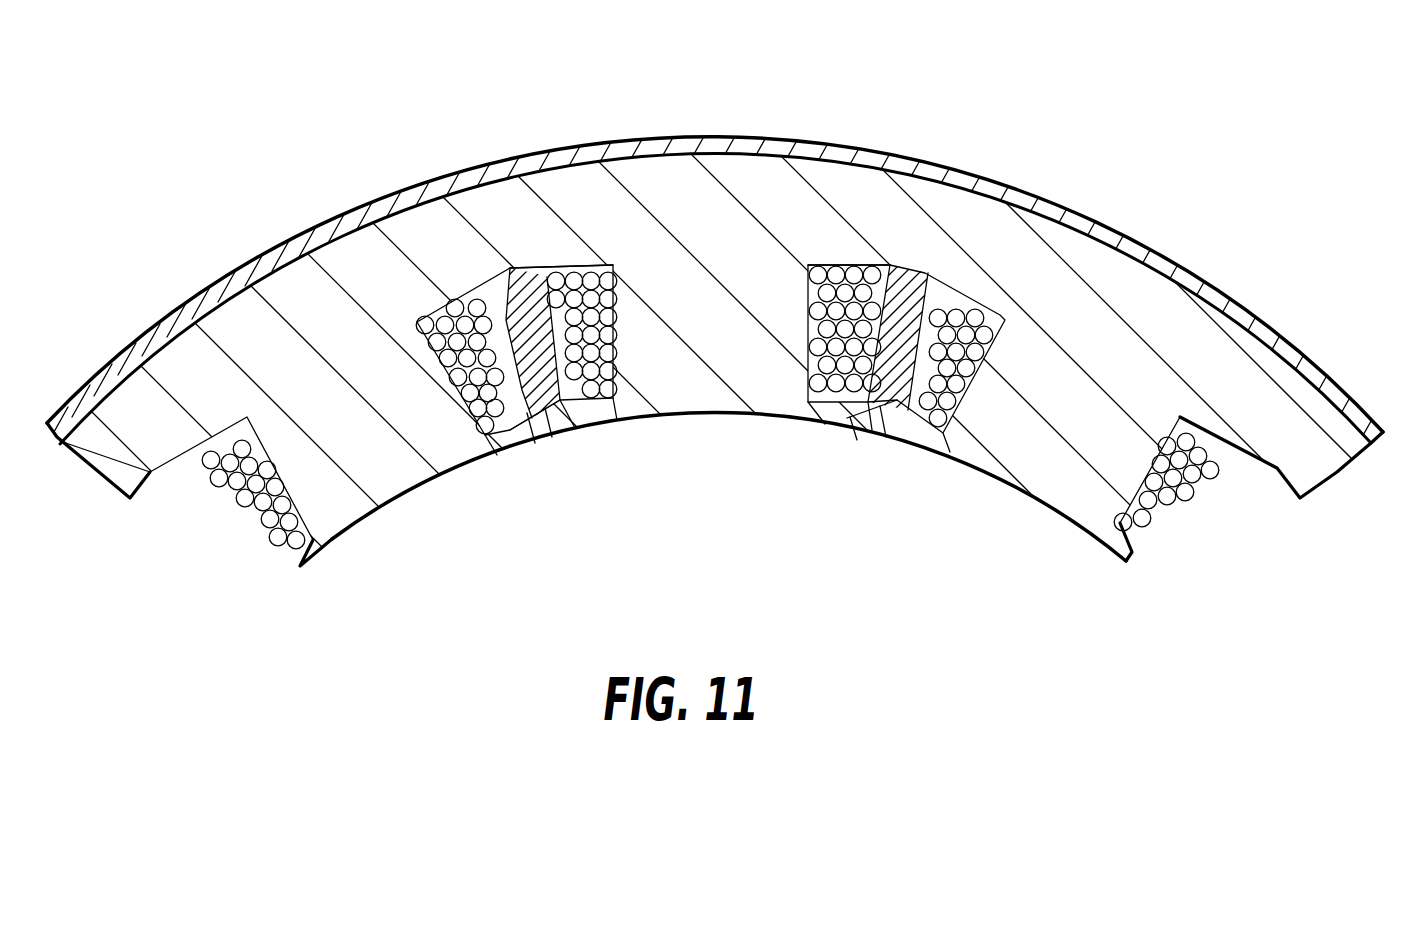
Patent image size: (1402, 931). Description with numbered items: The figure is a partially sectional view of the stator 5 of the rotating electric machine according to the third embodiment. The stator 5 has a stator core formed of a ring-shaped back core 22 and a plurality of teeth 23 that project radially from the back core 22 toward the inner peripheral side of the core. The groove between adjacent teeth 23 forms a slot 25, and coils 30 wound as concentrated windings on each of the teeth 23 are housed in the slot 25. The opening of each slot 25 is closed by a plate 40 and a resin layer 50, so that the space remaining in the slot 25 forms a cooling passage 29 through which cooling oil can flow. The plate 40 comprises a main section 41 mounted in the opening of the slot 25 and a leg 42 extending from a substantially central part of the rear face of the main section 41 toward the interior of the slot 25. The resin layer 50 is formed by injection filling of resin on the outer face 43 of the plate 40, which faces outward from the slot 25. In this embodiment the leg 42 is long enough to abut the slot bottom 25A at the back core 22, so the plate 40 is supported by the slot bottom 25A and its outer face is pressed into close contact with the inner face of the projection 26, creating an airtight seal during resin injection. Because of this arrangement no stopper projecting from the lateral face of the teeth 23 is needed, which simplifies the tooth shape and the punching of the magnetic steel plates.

The stator 5 is at (771, 212).
The back core 22 is at (287, 303).
The teeth 23 is at (727, 372).
The slot 25 is at (452, 292).
The slot bottom 25A is at (552, 262).
The projection 26 is at (498, 457).
The cooling passage 29 is at (577, 267).
The coils 30 is at (618, 270).
The plate 40 is at (547, 447).
The main section 41 is at (557, 437).
The leg 42 is at (505, 265).
The outer face 43 is at (590, 430).
The resin layer 50 is at (530, 447).